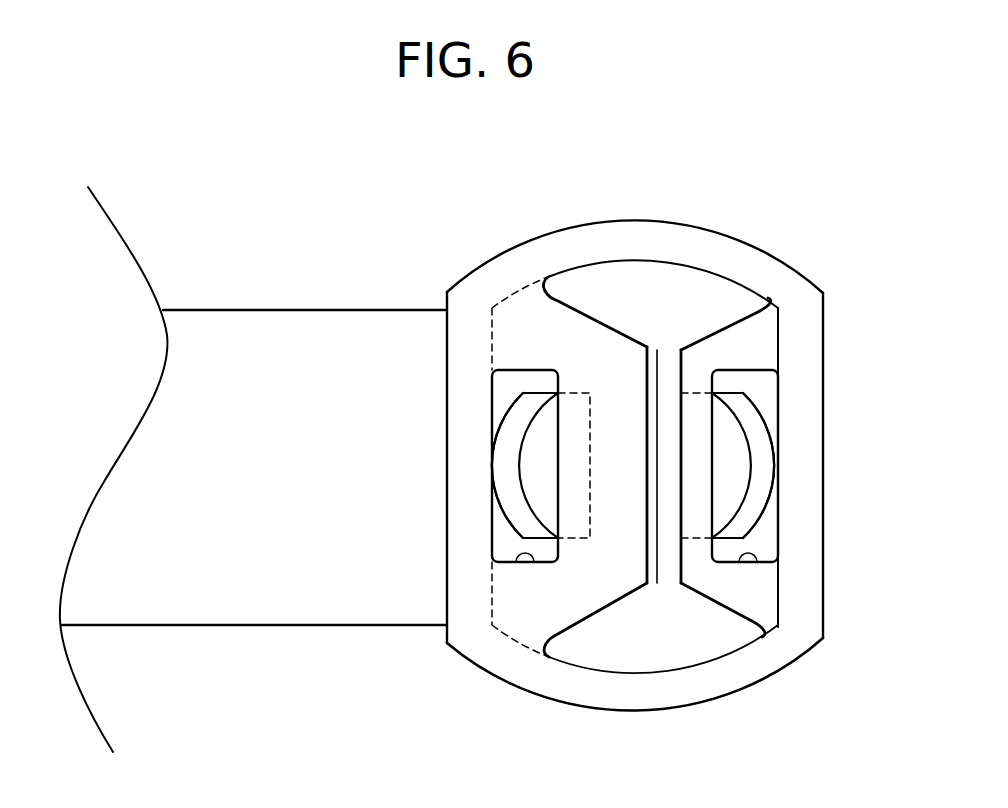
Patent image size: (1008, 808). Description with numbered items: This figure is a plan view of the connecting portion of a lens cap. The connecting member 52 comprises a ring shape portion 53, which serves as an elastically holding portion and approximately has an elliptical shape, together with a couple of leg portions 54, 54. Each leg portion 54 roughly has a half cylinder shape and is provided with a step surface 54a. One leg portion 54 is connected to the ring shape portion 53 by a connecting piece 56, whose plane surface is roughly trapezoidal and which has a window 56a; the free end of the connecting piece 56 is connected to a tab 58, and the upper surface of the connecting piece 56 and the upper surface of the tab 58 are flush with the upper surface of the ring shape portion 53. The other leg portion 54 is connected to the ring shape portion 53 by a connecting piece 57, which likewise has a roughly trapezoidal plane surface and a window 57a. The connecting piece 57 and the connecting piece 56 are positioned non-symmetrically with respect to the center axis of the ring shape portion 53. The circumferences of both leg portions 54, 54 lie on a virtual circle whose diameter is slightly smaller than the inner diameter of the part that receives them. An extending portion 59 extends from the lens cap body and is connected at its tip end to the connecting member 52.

The connecting member 52 is at (638, 192).
The ring shape portion 53 is at (722, 253).
The leg portion 54 is at (542, 440).
The step surface 54a is at (507, 443).
The connecting piece 56 is at (582, 603).
The window 56a is at (518, 555).
The connecting piece 57 is at (727, 593).
The window 57a is at (763, 560).
The tab 58 is at (633, 503).
The extending portion 59 is at (212, 328).